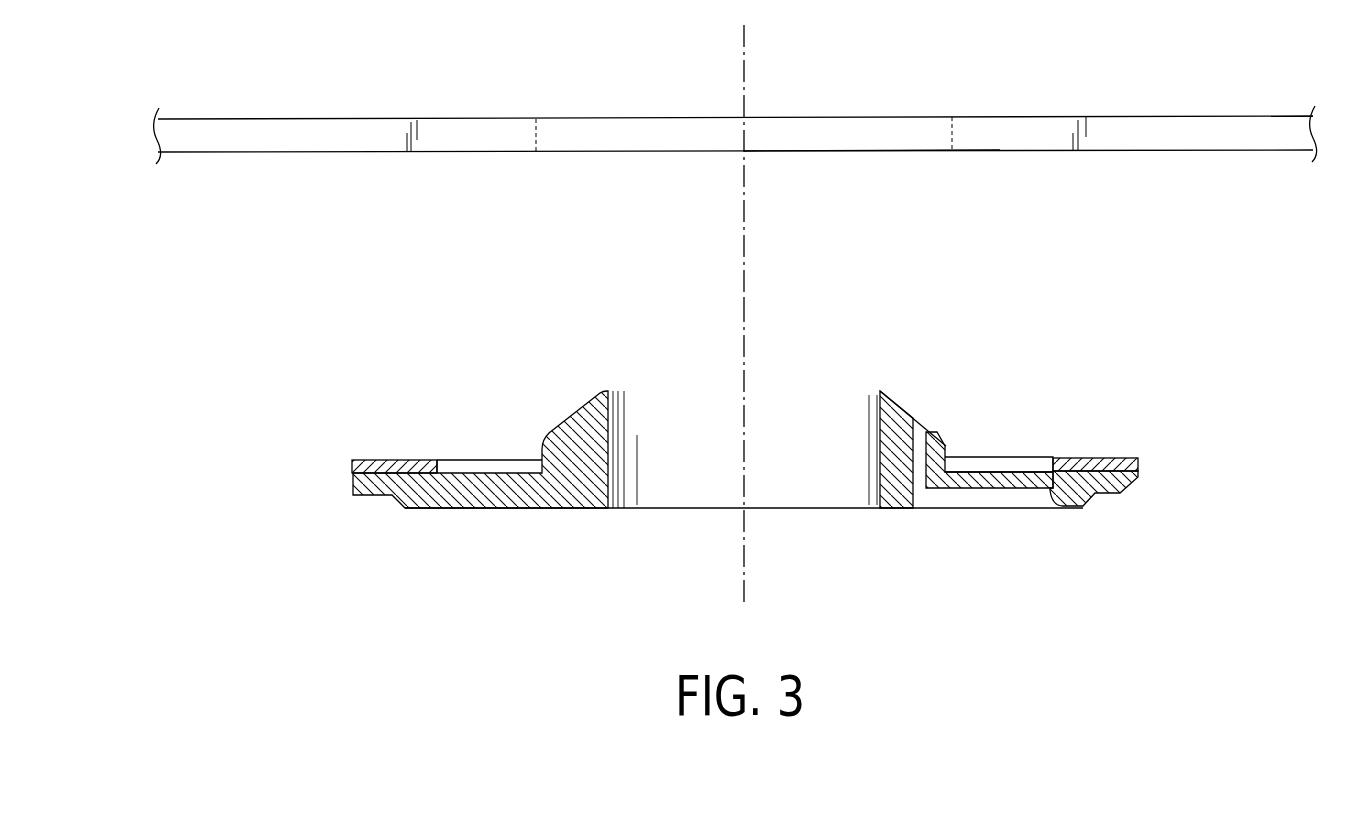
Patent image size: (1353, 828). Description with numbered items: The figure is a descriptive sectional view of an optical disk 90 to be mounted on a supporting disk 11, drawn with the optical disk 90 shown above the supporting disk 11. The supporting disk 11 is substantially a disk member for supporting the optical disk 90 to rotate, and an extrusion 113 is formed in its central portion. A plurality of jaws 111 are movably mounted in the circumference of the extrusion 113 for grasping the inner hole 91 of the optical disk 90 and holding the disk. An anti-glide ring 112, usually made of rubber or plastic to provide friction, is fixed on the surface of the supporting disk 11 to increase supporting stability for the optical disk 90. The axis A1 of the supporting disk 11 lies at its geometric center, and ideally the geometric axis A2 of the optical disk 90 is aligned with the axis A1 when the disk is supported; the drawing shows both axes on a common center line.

The supporting disk 11 is at (530, 533).
The jaws 111 is at (938, 445).
The anti-glide ring 112 is at (397, 463).
The extrusion 113 is at (640, 400).
The optical disk 90 is at (1183, 152).
The inner hole 91 is at (879, 152).
The axis of the supporting disk A1 is at (745, 558).
The geometric axis of the optical disk A2 is at (744, 73).